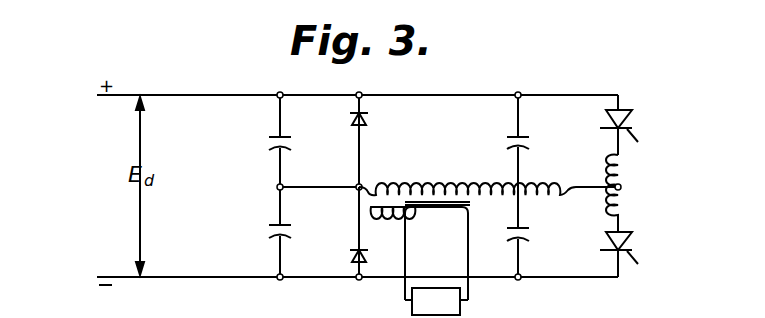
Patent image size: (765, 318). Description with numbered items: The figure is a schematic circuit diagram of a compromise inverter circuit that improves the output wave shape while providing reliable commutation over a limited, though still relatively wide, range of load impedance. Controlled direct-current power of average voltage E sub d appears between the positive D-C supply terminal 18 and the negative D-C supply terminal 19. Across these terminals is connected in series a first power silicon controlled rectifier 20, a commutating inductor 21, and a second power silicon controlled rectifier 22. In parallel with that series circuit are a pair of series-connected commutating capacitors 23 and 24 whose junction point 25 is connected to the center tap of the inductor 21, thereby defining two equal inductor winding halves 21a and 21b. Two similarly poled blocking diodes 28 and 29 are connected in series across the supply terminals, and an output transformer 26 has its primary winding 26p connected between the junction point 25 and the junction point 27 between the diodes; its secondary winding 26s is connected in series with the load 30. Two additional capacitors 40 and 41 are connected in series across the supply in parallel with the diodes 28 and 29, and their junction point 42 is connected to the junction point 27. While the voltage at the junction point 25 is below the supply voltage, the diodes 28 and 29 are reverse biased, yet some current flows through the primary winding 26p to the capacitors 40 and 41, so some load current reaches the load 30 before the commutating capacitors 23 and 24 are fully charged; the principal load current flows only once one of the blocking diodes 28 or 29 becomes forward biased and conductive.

The positive D-C supply terminal 18 is at (200, 95).
The negative D-C supply terminal 19 is at (190, 278).
The first power silicon controlled rectifier 20 is at (606, 120).
The commutating inductor 21 is at (638, 190).
The inductor winding half 21a is at (625, 165).
The inductor winding half 21b is at (625, 210).
The second power silicon controlled rectifier 22 is at (604, 252).
The commutating capacitor 23 is at (510, 137).
The commutating capacitor 24 is at (529, 233).
The junction point 25 is at (516, 198).
The output transformer 26 is at (488, 226).
The primary winding 26p is at (448, 183).
The secondary winding 26s is at (438, 218).
The junction point 27 is at (356, 186).
The blocking diode 28 is at (349, 119).
The blocking diode 29 is at (349, 258).
The load 30 is at (411, 302).
The additional capacitor 40 is at (276, 137).
The additional capacitor 41 is at (276, 225).
The junction point 42 is at (277, 187).